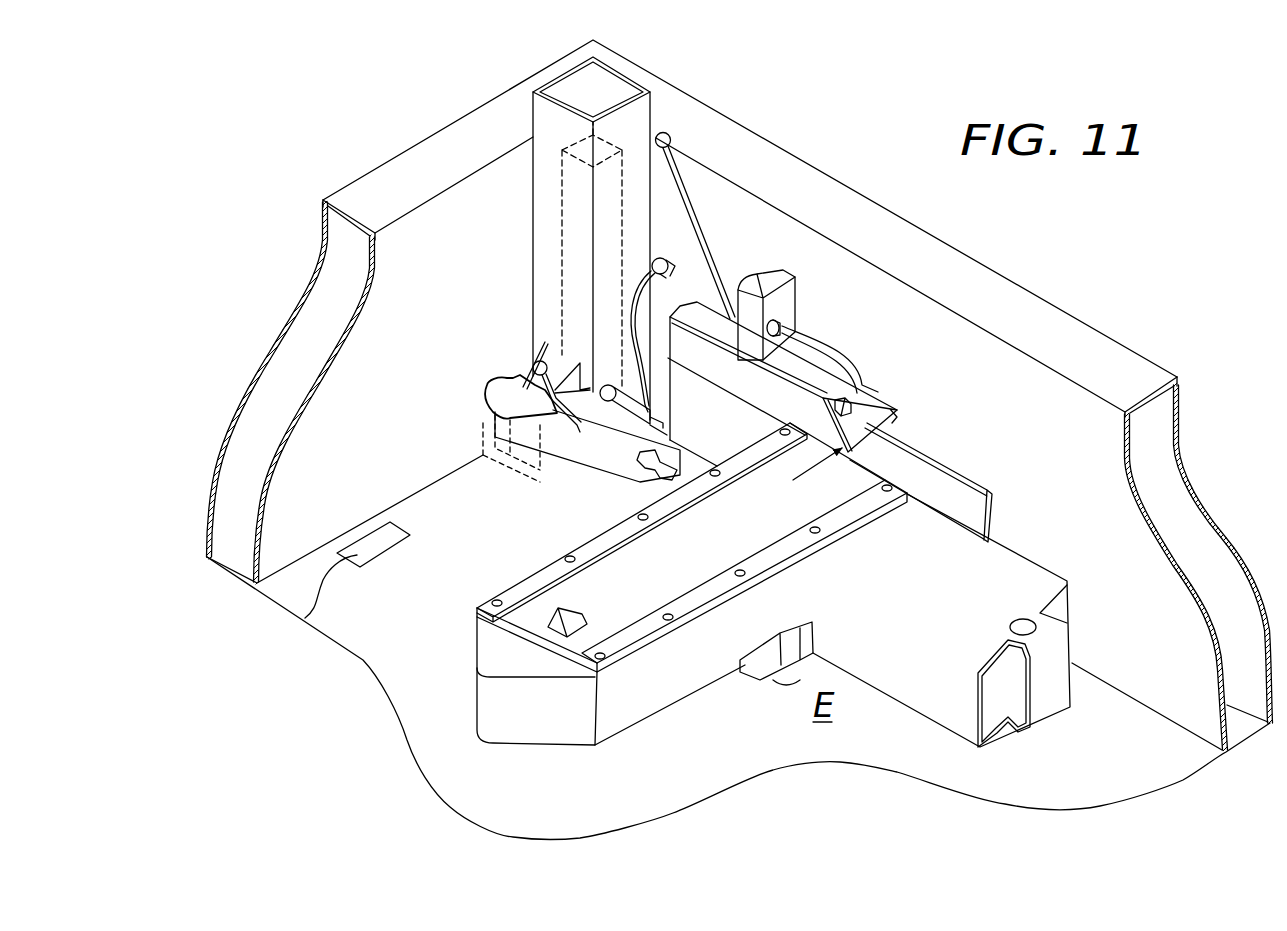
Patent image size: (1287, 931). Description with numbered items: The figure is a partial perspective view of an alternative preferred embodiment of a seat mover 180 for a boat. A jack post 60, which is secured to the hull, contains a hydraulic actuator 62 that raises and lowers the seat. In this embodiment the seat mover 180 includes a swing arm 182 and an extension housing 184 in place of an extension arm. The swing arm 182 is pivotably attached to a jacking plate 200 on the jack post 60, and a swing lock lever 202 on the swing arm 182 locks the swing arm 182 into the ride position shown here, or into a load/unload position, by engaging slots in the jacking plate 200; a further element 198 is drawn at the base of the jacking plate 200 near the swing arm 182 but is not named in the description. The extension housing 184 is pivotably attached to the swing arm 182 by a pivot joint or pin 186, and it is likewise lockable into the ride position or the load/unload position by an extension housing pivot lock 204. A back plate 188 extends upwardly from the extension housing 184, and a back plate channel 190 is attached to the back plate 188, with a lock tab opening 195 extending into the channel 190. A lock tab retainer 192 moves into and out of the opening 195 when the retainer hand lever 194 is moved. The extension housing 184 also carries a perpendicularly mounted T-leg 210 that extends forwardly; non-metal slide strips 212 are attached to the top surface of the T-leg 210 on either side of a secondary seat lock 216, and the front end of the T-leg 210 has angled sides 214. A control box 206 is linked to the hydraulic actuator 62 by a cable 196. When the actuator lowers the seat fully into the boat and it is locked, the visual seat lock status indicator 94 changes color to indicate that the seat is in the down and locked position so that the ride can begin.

The jack post 60 is at (642, 116).
The hydraulic actuator 62 is at (562, 210).
The visual seat lock status indicator 94 is at (305, 618).
The seat mover 180 is at (475, 373).
The swing arm 182 is at (585, 470).
The extension housing 184 is at (1010, 576).
The pivot joint or pin 186 is at (1022, 619).
The back plate 188 is at (953, 490).
The back plate channel 190 is at (803, 370).
The lock tab retainer 192 is at (847, 397).
The retainer hand lever 194 is at (698, 212).
The lock tab opening 195 is at (802, 481).
The cable 196 is at (633, 312).
The base block 198 is at (500, 424).
The jacking plate 200 is at (512, 380).
The swing lock lever 202 is at (542, 345).
The extension housing pivot lock 204 is at (643, 490).
The control box 206 is at (793, 295).
The T-leg 210 is at (657, 682).
The slide strips 212 is at (527, 583).
The angled sides 214 is at (490, 707).
The secondary seat lock 216 is at (570, 612).